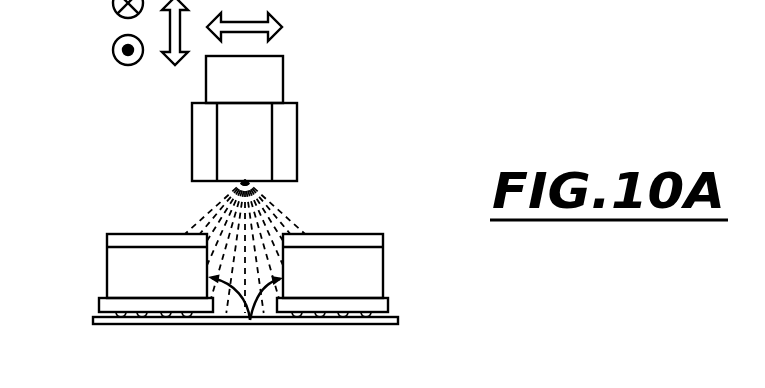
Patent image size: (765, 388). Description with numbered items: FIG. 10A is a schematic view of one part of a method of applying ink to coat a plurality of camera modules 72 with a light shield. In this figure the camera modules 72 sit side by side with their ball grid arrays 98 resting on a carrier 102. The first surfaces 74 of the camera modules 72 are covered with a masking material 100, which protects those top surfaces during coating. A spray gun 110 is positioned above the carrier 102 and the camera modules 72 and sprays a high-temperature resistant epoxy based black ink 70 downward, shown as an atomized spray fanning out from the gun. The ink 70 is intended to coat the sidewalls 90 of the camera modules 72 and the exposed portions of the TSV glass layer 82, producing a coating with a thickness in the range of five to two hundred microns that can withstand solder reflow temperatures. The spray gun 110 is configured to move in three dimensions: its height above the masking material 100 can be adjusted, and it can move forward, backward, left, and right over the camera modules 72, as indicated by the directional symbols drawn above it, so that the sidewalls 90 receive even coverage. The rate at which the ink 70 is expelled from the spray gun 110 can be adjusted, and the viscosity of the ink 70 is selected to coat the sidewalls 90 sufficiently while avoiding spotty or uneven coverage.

The ink 70 is at (200, 217).
The camera module 72 is at (72, 270).
The first surface 74 is at (337, 240).
The TSV glass layer 82 is at (380, 300).
The sidewall 90 is at (250, 320).
The ball grid array 98 is at (163, 318).
The masking material 100 is at (110, 240).
The carrier 102 is at (398, 320).
The spray gun 110 is at (270, 82).